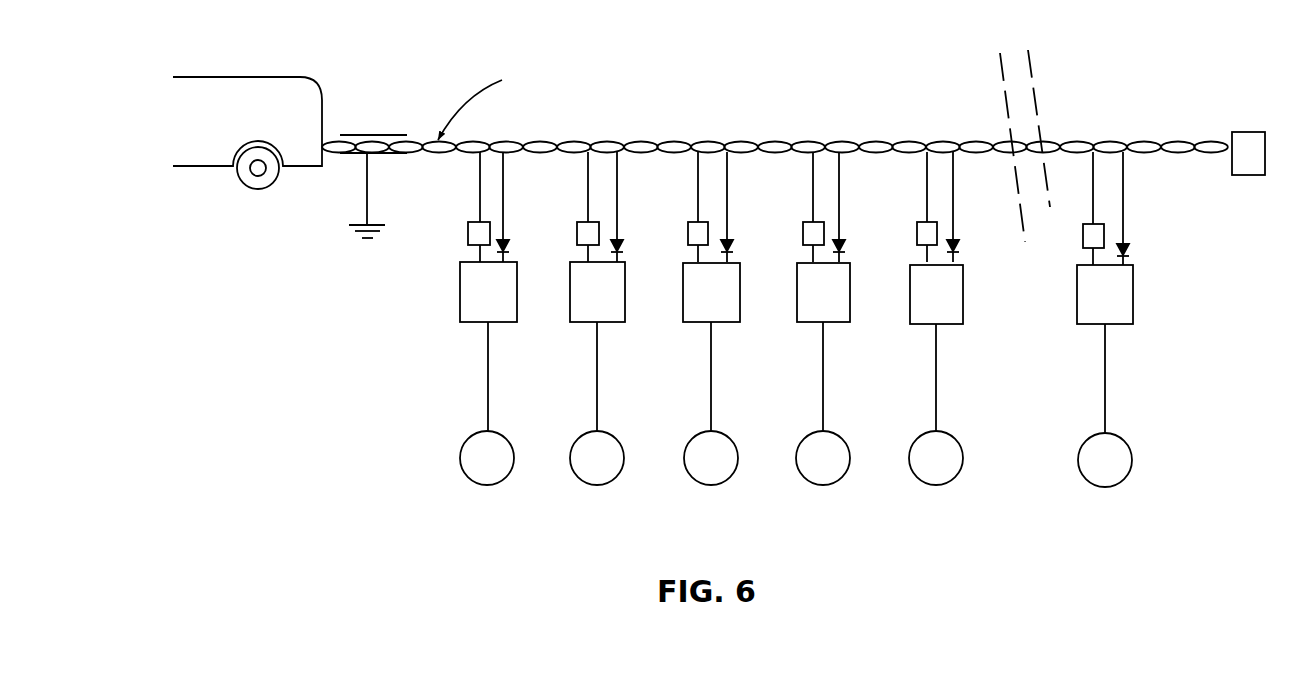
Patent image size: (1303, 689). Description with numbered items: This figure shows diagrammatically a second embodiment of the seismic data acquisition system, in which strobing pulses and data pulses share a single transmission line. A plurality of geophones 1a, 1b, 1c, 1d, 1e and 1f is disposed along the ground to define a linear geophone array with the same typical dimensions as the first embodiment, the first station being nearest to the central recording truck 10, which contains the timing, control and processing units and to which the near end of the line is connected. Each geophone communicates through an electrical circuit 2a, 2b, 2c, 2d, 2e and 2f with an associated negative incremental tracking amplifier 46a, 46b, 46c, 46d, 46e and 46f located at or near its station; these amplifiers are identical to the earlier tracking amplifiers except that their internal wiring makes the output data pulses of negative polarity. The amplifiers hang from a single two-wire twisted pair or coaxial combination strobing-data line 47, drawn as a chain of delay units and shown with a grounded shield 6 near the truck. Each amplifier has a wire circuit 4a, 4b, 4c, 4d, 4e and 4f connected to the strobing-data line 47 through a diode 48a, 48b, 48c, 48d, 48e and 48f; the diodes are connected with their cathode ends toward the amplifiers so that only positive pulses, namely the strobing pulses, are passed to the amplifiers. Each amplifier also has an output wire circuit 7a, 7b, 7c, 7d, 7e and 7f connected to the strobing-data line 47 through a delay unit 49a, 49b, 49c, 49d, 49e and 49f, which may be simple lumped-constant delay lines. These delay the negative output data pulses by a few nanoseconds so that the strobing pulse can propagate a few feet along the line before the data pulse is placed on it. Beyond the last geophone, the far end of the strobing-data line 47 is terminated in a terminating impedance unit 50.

The recording truck 10 is at (276, 74).
The grounded shield 6 is at (360, 133).
The combination strobing-data line 47 is at (537, 140).
The terminating impedance unit 50 is at (1245, 130).
The output wire circuit 7a is at (478, 177).
The output wire circuit 7b is at (586, 177).
The output wire circuit 7c is at (696, 177).
The output wire circuit 7d is at (811, 177).
The output wire circuit 7e is at (925, 177).
The output wire circuit 7f is at (1091, 177).
The wire circuit 4a is at (506, 203).
The wire circuit 4b is at (620, 203).
The wire circuit 4c is at (730, 203).
The wire circuit 4d is at (842, 203).
The wire circuit 4e is at (956, 203).
The wire circuit 4f is at (1126, 203).
The delay unit 49a is at (468, 221).
The delay unit 49b is at (577, 234).
The delay unit 49c is at (687, 233).
The delay unit 49d is at (802, 236).
The delay unit 49e is at (916, 236).
The delay unit 49f is at (1082, 240).
The diode 48a is at (510, 251).
The diode 48b is at (624, 251).
The diode 48c is at (734, 251).
The diode 48d is at (846, 251).
The diode 48e is at (960, 251).
The diode 48f is at (1130, 253).
The negative incremental tracking amplifier 46a is at (488, 292).
The negative incremental tracking amplifier 46b is at (597, 292).
The negative incremental tracking amplifier 46c is at (711, 292).
The negative incremental tracking amplifier 46d is at (823, 292).
The negative incremental tracking amplifier 46e is at (936, 294).
The negative incremental tracking amplifier 46f is at (1105, 294).
The electrical circuit 2a is at (485, 388).
The electrical circuit 2b is at (594, 388).
The electrical circuit 2c is at (708, 388).
The electrical circuit 2d is at (820, 388).
The electrical circuit 2e is at (933, 388).
The electrical circuit 2f is at (1102, 388).
The geophone 1a is at (487, 458).
The geophone 1b is at (597, 458).
The geophone 1c is at (711, 458).
The geophone 1d is at (823, 458).
The geophone 1e is at (936, 458).
The geophone 1f is at (1105, 460).